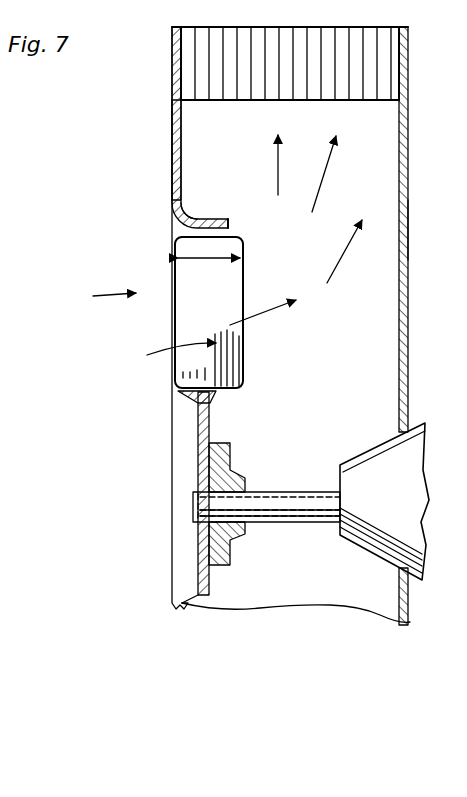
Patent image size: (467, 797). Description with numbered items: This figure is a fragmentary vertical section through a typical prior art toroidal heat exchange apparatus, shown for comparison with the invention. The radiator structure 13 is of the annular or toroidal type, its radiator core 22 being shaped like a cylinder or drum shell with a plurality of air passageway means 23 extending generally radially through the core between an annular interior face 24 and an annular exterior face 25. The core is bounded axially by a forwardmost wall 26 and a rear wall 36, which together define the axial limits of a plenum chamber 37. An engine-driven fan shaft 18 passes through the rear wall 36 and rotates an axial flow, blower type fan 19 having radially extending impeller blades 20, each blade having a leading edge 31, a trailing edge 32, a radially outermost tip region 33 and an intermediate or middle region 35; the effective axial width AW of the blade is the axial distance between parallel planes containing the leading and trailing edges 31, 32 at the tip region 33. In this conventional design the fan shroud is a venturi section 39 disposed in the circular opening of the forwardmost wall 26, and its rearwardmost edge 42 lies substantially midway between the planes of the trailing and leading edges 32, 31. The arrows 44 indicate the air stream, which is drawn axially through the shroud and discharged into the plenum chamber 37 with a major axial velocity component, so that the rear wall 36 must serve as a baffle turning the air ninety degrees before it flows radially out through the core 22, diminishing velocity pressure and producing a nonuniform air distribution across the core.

The radiator structure 13 is at (412, 138).
The fan shaft 18 is at (317, 475).
The fan 19 is at (194, 483).
The fan impeller blades 20 is at (227, 317).
The radiator core 22 is at (365, 30).
The air passageway means 23 is at (283, 28).
The annular interior face 24 is at (343, 100).
The annular exterior face 25 is at (200, 26).
The forwardmost wall 26 is at (172, 145).
The leading edge 31 is at (175, 336).
The trailing edge 32 is at (243, 264).
The radially outermost blade tip region 33 is at (243, 239).
The middle region of the blade 35 is at (196, 300).
The rear wall 36 is at (410, 238).
The plenum chamber 37 is at (378, 353).
The venturi section 39 is at (198, 226).
The rearwardmost edge of the fan shroud 42 is at (226, 229).
The air flow arrows 44 is at (334, 158).
The effective axial width AW is at (185, 272).